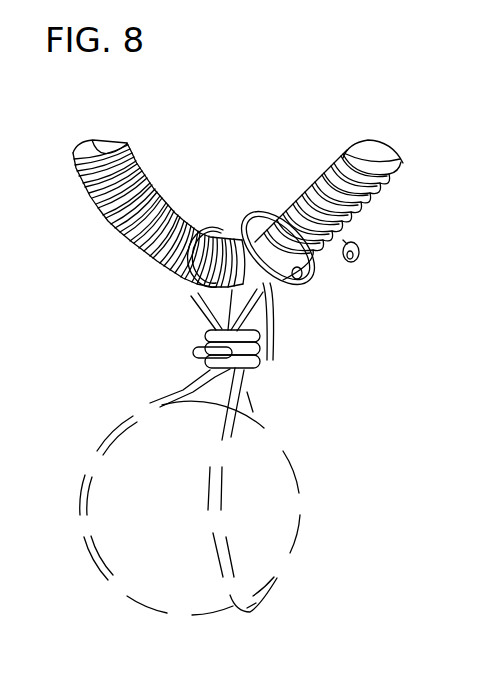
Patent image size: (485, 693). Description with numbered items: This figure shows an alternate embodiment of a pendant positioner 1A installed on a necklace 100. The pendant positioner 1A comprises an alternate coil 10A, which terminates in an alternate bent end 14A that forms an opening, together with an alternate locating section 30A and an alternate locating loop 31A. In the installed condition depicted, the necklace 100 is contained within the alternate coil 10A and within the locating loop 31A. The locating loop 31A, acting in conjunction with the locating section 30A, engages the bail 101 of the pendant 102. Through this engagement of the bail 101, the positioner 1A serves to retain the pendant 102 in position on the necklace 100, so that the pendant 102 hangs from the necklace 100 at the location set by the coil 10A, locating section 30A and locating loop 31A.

The necklace 100 is at (128, 150).
The bail 101 is at (213, 237).
The pendant positioner 1A is at (263, 225).
The alternate coil 10A is at (307, 283).
The alternate bent end 14A is at (360, 253).
The alternate locating section 30A is at (267, 323).
The alternate locating loop 31A is at (193, 352).
The pendant 102 is at (273, 532).